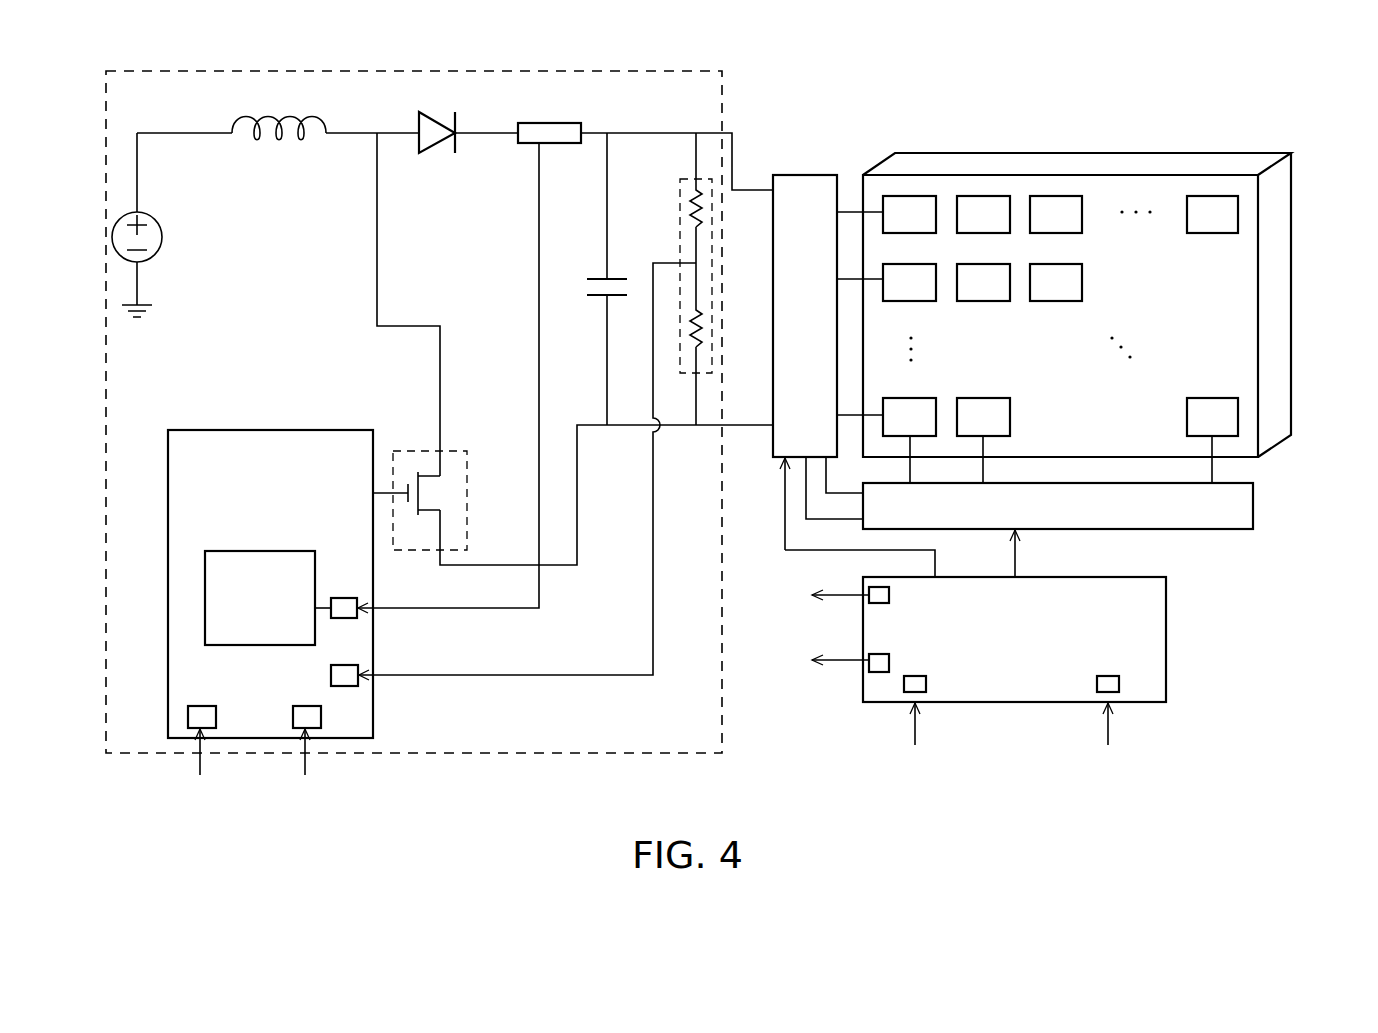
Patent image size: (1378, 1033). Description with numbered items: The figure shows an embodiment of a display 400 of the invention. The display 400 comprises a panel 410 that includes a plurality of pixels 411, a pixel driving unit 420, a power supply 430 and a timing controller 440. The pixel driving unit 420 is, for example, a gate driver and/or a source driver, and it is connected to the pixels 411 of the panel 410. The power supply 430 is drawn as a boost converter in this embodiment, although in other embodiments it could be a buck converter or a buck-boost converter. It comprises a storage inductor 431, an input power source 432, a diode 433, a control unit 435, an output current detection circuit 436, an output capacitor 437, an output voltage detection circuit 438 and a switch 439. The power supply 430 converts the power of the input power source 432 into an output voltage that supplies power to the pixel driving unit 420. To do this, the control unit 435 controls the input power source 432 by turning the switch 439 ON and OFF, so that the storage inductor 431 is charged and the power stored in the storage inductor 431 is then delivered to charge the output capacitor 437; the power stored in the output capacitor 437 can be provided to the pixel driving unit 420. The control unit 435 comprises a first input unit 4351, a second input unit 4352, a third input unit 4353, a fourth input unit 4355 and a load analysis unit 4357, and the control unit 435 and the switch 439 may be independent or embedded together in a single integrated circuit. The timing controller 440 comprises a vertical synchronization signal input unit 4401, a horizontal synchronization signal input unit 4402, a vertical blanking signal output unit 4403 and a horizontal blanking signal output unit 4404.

The display 400 is at (1260, 107).
The panel 410 is at (1155, 153).
The pixels 411 is at (990, 196).
The pixel driving unit 420 is at (805, 175).
The power supply 430 is at (722, 718).
The storage inductor 431 is at (248, 140).
The input power source 432 is at (162, 240).
The diode 433 is at (435, 147).
The control unit 435 is at (270, 430).
The output current detection circuit 436 is at (562, 123).
The output capacitor 437 is at (628, 283).
The output voltage detection circuit 438 is at (680, 198).
The switch 439 is at (460, 451).
The first input unit 4351 is at (345, 598).
The second input unit 4352 is at (345, 665).
The third input unit 4353 is at (321, 717).
The fourth input unit 4355 is at (216, 716).
The load analysis unit 4357 is at (258, 551).
The timing controller 440 is at (1166, 625).
The vertical synchronization signal input unit 4401 is at (926, 684).
The horizontal synchronization signal input unit 4402 is at (1119, 680).
The vertical blanking signal output unit 4403 is at (869, 589).
The horizontal blanking signal output unit 4404 is at (869, 659).